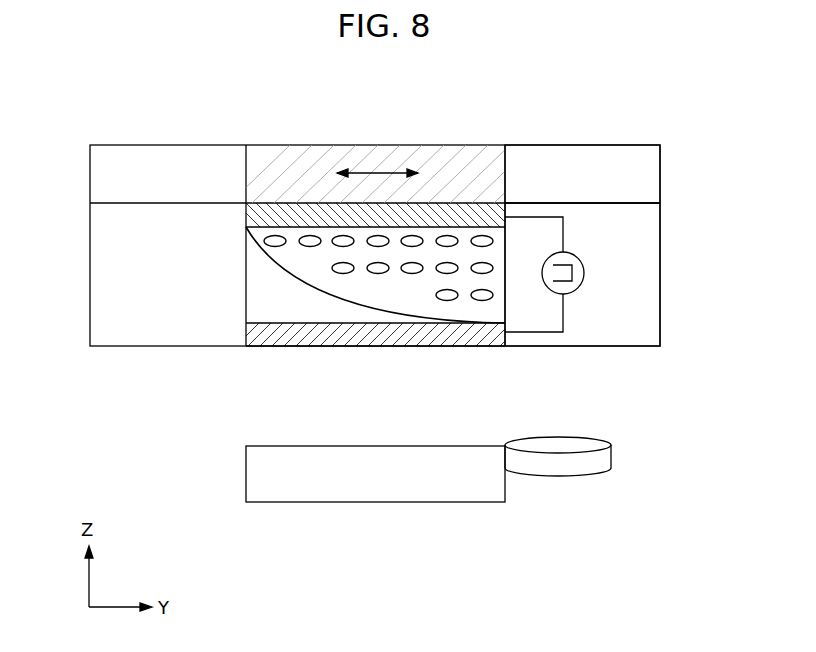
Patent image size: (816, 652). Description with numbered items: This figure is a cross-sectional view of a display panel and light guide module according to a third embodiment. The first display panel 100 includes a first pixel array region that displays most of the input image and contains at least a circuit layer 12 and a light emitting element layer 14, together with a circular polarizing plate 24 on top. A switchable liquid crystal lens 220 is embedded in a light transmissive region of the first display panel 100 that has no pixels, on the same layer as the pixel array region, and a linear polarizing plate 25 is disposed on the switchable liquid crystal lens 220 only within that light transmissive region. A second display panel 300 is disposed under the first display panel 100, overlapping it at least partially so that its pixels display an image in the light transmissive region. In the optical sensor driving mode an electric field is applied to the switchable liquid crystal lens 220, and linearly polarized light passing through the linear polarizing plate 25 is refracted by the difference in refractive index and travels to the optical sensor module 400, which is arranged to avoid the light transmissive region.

The first display panel 100 is at (80, 145).
The linear polarizing plate 25 is at (480, 152).
The circular polarizing plate 24 is at (660, 172).
The circuit layer 12 is at (627, 274).
The light emitting element layer 14 is at (544, 274).
The switchable liquid crystal lens 220 is at (485, 349).
The second display panel 300 is at (245, 472).
The optical sensor module 400 is at (612, 452).